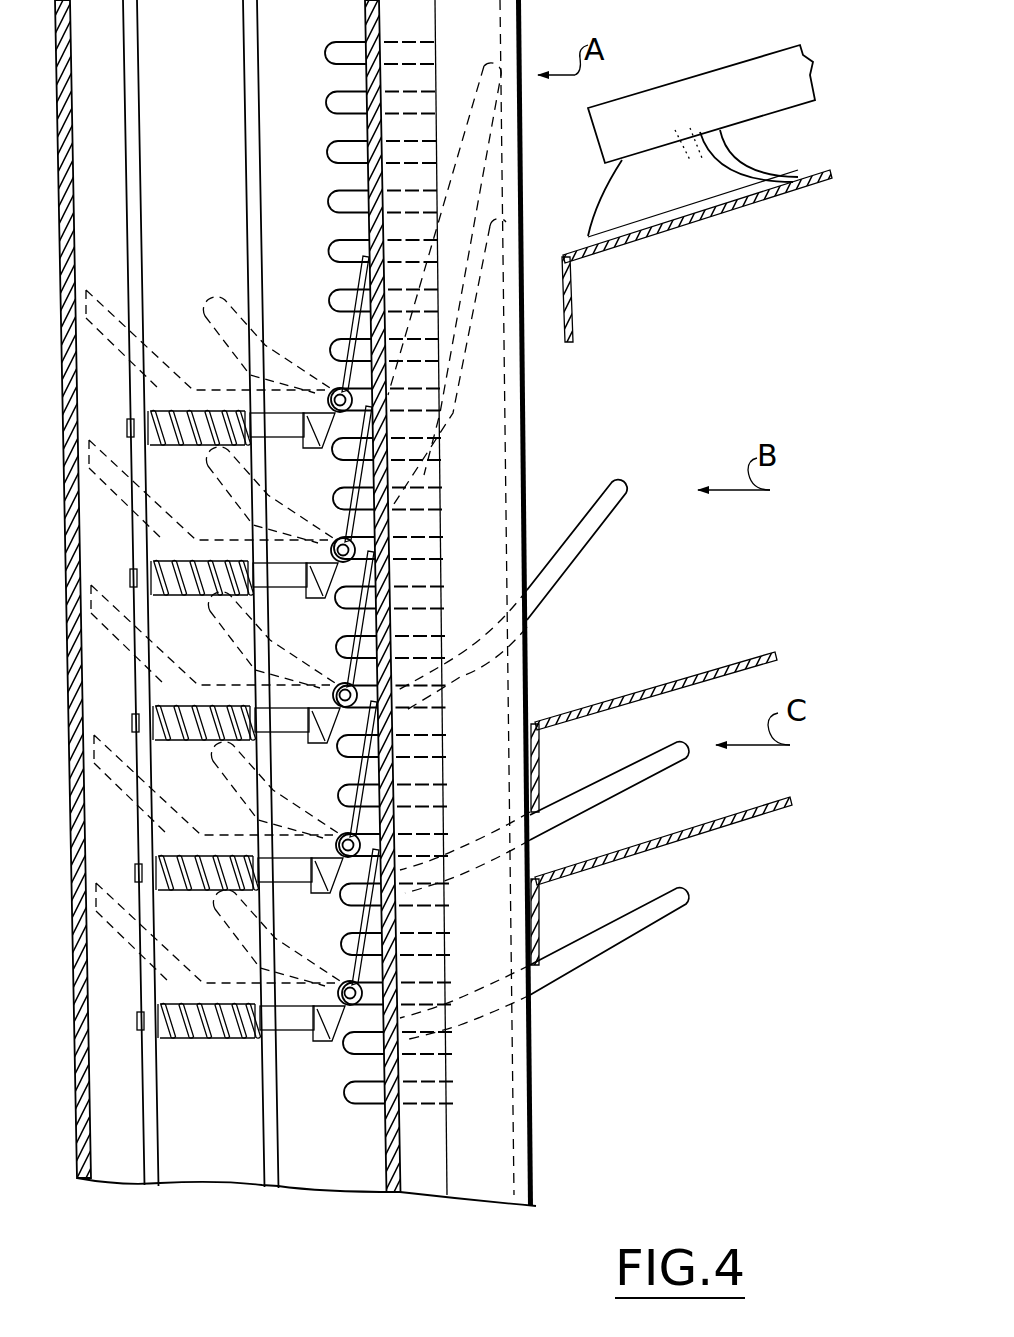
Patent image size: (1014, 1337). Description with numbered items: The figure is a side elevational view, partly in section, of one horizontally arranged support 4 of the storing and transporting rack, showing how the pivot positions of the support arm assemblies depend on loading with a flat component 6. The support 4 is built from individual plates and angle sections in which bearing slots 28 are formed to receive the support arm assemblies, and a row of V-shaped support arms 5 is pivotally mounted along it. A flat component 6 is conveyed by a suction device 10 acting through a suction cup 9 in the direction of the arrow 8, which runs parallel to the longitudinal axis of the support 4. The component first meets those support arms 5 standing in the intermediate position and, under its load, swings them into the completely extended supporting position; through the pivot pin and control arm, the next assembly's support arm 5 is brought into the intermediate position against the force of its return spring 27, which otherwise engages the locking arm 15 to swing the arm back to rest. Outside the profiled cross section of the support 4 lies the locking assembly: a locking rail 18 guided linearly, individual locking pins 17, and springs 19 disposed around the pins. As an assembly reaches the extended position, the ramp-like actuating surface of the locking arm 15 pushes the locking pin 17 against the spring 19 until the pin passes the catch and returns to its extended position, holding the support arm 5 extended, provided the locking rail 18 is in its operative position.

The locking rail 18 is at (137, 77).
The bearing slots 28 is at (328, 207).
The spring 19 is at (216, 1036).
The locking pin 17 is at (303, 1030).
The locking arm 15 is at (334, 1010).
The spring 27 is at (373, 942).
The support arm 5 is at (490, 265).
The support 4 is at (530, 1027).
The suction device 10 is at (735, 66).
The suction cup 9 is at (752, 166).
The flat component 6 is at (788, 200).
The arrow 8 is at (670, 245).